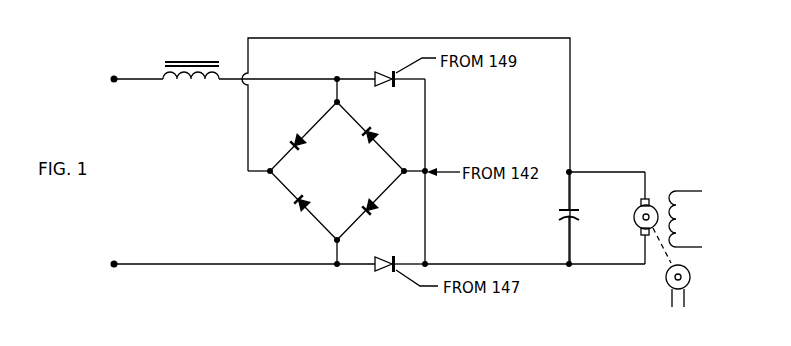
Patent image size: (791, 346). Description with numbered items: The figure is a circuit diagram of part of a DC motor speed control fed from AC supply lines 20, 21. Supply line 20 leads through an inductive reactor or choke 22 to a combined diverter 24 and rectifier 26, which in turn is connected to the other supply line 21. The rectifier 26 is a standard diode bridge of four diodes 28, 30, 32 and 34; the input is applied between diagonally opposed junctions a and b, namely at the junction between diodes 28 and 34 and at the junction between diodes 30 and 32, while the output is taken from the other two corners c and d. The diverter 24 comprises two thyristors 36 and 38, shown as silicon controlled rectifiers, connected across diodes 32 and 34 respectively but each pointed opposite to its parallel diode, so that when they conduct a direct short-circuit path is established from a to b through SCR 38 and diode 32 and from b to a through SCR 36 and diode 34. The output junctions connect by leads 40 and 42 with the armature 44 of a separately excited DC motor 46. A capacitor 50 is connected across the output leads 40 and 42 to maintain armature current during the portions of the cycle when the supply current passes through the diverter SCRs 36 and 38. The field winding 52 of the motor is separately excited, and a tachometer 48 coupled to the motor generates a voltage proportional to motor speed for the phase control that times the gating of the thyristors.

The AC supply line 20 is at (132, 90).
The AC supply line 21 is at (221, 254).
The choke 22 is at (191, 60).
The diverter 24 is at (442, 135).
The rectifier 26 is at (349, 184).
The diode 28 is at (288, 135).
The diode 30 is at (288, 206).
The diode 32 is at (381, 208).
The diode 34 is at (380, 131).
The thyristor (SCR) 36 is at (384, 279).
The thyristor (SCR) 38 is at (384, 68).
The output lead 40 is at (306, 39).
The output lead 42 is at (470, 263).
The armature 44 is at (637, 226).
The DC motor 46 is at (662, 193).
The tachometer 48 is at (684, 267).
The capacitor 50 is at (554, 216).
The field winding 52 is at (685, 219).